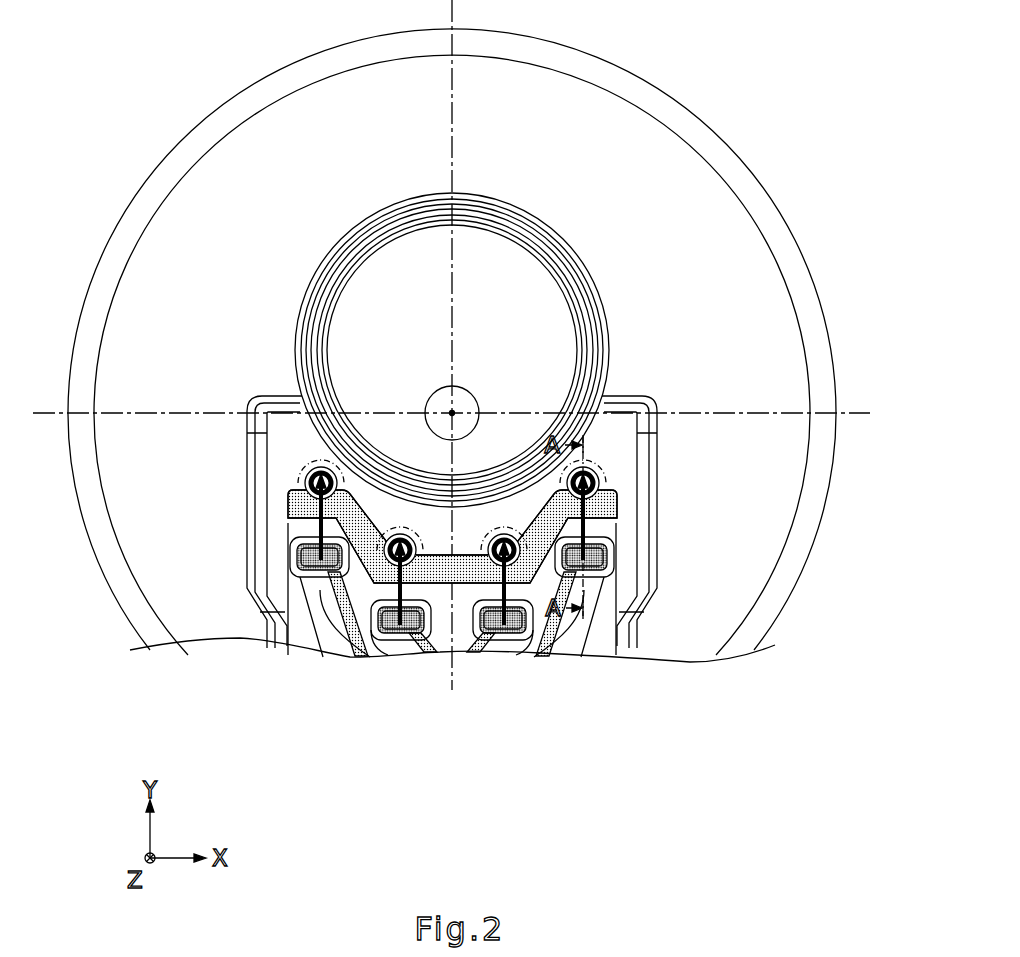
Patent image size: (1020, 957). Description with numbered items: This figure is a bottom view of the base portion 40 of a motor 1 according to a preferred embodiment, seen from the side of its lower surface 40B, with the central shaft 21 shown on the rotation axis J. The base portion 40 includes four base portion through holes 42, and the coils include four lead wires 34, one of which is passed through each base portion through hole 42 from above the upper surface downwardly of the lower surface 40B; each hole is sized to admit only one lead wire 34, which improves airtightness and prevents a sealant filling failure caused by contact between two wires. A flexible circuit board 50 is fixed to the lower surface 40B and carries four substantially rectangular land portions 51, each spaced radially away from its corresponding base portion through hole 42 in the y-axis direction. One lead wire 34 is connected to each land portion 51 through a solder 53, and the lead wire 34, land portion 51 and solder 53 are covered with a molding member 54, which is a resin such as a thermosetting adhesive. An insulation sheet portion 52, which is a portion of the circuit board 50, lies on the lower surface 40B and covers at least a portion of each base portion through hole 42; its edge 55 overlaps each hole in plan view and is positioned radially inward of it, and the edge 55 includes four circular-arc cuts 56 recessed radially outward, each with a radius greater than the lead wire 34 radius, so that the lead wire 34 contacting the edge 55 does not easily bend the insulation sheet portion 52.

The motor unit 1 is at (148, 128).
The base portion 40 is at (180, 263).
The lower surface 40B is at (630, 565).
The circuit board 50 is at (305, 660).
The shaft 21 is at (440, 392).
The rotation axis J is at (455, 410).
The insulation sheet portion 52 is at (622, 503).
The base portion through hole 42 is at (316, 472).
The molding member 54 is at (300, 477).
The cut 56 is at (323, 475).
The edge 55 is at (570, 473).
The lead wire 34 is at (296, 545).
The land portion 51 is at (302, 580).
The solder 53 is at (338, 620).